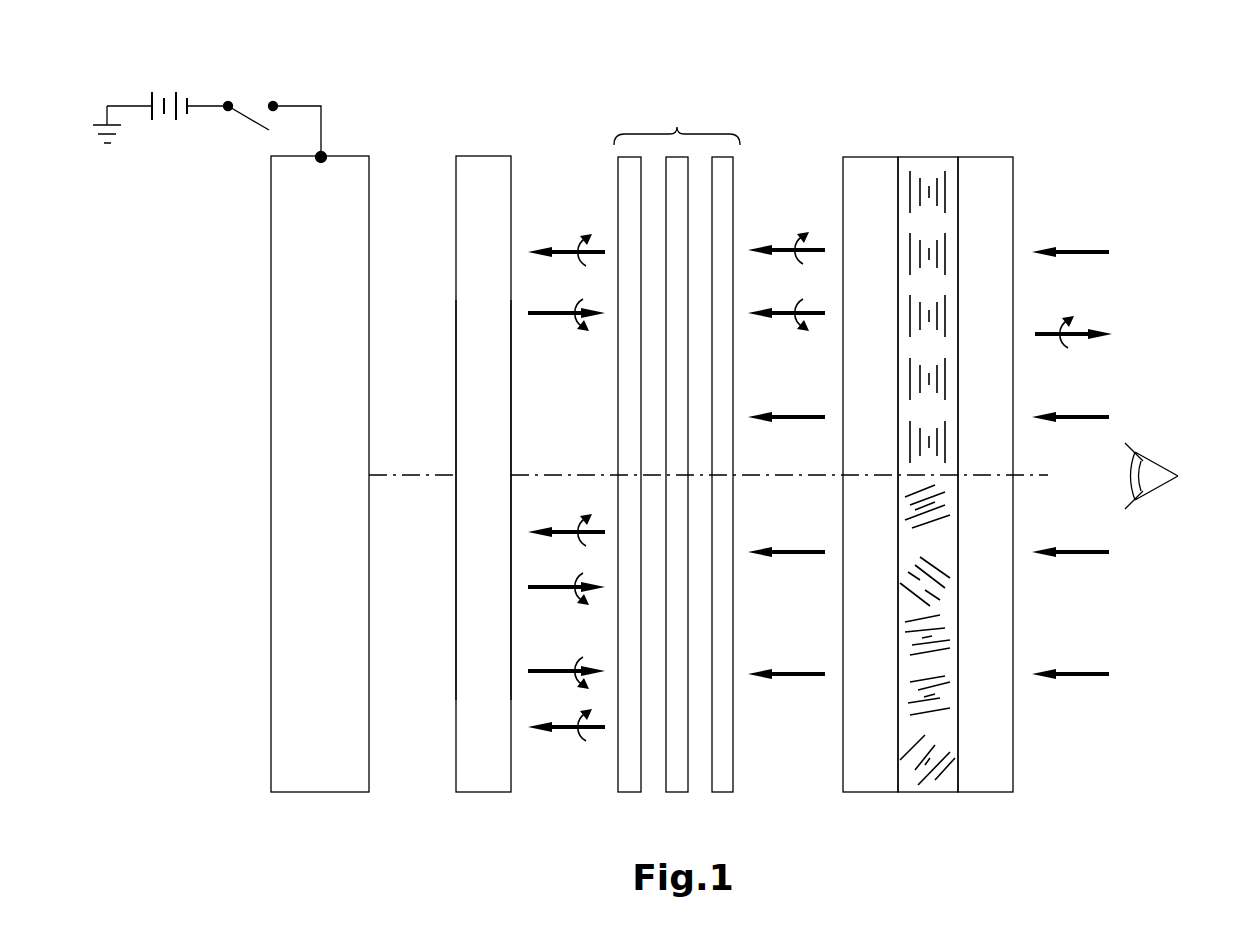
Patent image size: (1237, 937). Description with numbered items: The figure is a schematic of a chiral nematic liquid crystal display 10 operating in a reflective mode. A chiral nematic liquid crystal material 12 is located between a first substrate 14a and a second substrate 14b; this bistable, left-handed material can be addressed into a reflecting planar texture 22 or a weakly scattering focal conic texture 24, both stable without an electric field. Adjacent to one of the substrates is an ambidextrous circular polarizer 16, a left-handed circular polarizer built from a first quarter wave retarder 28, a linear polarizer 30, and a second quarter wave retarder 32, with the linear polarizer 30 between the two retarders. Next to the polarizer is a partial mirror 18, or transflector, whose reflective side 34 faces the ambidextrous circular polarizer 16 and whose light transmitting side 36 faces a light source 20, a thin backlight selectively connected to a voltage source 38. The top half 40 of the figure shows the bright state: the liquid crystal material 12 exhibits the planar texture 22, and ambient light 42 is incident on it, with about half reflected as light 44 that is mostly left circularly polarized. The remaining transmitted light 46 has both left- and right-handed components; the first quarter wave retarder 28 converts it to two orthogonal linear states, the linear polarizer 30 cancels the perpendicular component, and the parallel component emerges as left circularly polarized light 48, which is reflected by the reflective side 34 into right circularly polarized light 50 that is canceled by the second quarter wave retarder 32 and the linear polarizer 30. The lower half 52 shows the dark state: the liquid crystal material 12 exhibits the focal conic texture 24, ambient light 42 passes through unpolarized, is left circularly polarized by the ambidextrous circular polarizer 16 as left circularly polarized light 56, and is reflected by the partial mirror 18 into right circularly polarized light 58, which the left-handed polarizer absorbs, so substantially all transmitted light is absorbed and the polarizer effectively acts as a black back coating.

The chiral nematic liquid crystal display 10 is at (1200, 102).
The chiral nematic liquid crystal material 12 is at (917, 358).
The first substrate 14a is at (873, 167).
The second substrate 14b is at (983, 187).
The ambidextrous circular polarizer 16 is at (672, 472).
The partial mirror 18 is at (485, 770).
The light source 20 is at (327, 757).
The planar texture 22 is at (938, 253).
The focal conic texture 24 is at (938, 640).
The first quarter wave retarder 28 is at (725, 183).
The linear polarizer 30 is at (678, 778).
The second quarter wave retarder 32 is at (632, 178).
The reflective side 34 is at (512, 765).
The light transmitting side 36 is at (455, 765).
The voltage source 38 is at (186, 110).
The top half 40 is at (1100, 372).
The ambient light 42 is at (1078, 252).
The reflected light 44 is at (1075, 345).
The transmitted light 46 is at (785, 247).
The left circularly polarized light 48 is at (562, 250).
The right circularly polarized light 50 is at (543, 320).
The lower half 52 is at (1052, 712).
The left circularly polarized light 56 is at (590, 742).
The right circularly polarized light 58 is at (565, 530).